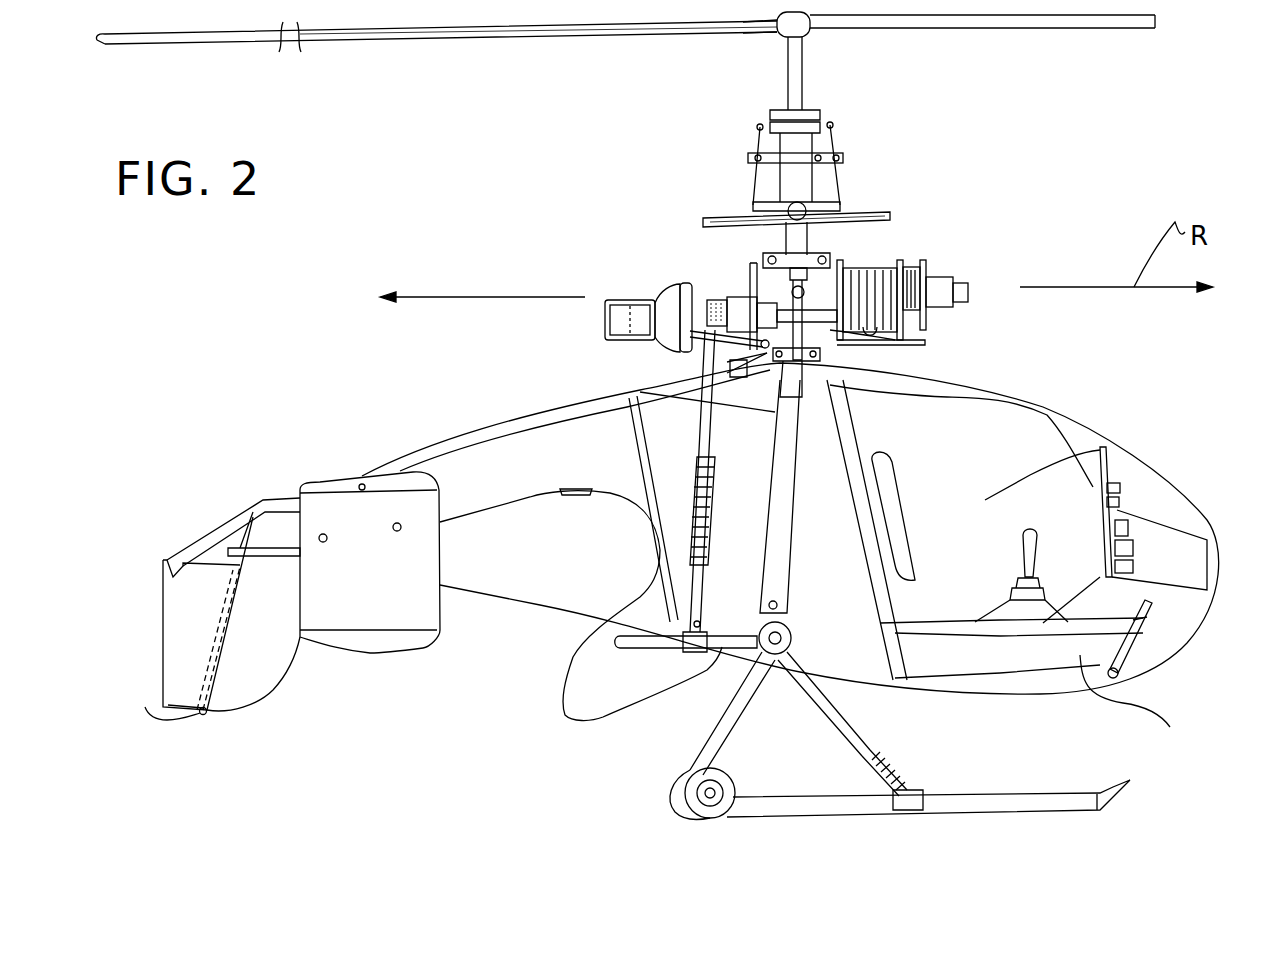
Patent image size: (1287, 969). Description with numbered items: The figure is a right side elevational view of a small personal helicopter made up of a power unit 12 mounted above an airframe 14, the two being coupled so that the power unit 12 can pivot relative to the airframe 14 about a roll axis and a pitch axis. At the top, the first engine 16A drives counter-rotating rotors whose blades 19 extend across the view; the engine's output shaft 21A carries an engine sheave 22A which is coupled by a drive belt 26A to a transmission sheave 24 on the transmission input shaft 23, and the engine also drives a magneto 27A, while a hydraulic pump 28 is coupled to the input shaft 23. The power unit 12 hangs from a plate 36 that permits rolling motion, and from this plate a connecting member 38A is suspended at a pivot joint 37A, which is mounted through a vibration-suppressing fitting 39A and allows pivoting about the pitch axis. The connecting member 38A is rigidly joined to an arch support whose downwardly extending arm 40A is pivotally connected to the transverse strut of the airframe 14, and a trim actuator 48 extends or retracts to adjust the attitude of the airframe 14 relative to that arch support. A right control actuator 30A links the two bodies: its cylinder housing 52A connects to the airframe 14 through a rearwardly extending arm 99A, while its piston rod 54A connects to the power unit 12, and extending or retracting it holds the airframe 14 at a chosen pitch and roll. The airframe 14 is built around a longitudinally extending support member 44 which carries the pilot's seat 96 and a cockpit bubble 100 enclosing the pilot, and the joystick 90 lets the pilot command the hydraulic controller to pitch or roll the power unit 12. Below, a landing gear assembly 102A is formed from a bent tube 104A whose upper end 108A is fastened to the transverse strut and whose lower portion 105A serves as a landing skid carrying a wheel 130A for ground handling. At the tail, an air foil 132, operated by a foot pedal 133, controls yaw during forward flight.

The power unit 12 is at (947, 200).
The airframe 14 is at (1020, 660).
The first engine 16A is at (667, 287).
The blade 19 is at (999, 30).
The output shaft 21A is at (783, 293).
The engine sheave 22A is at (905, 254).
The input shaft 23 is at (905, 240).
The transmission sheave 24 is at (907, 267).
The drive belt 26A is at (813, 343).
The magneto 27A is at (920, 322).
The hydraulic pump 28 is at (963, 287).
The right control actuator 30A is at (773, 390).
The plate 36 is at (828, 255).
The pivot joint 37A is at (740, 300).
The connecting member 38A is at (855, 403).
The vibration-suppressing fitting 39A is at (710, 223).
The downwardly extending arm 40A is at (790, 575).
The longitudinally extending support member 44 is at (1139, 701).
The trim actuator 48 is at (725, 360).
The cylinder housing 52A is at (697, 600).
The piston rod 54A is at (640, 382).
The joystick 90 is at (1040, 535).
The pilot's seat 96 is at (887, 490).
The arm 99A is at (713, 663).
The cockpit bubble 100 is at (1070, 470).
The landing gear assembly 102A is at (890, 828).
The bent tube 104A is at (797, 810).
The lower portion 105A is at (997, 807).
The upper end 108A is at (690, 733).
The wheel 130A is at (717, 813).
The air foil 132 is at (172, 638).
The foot pedal 133 is at (1150, 603).